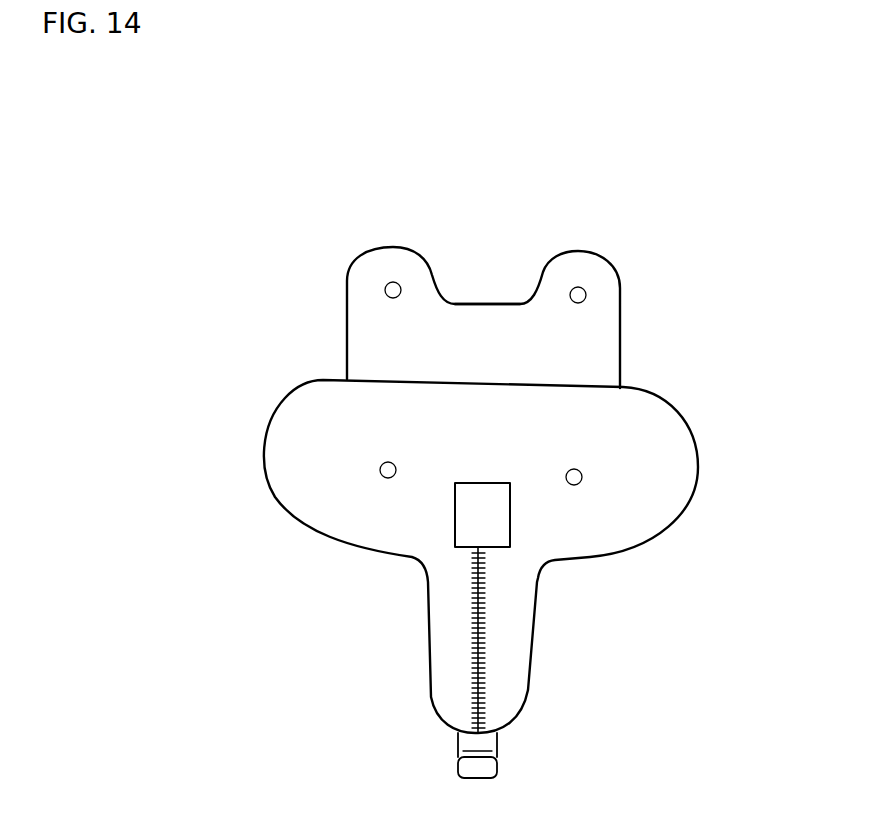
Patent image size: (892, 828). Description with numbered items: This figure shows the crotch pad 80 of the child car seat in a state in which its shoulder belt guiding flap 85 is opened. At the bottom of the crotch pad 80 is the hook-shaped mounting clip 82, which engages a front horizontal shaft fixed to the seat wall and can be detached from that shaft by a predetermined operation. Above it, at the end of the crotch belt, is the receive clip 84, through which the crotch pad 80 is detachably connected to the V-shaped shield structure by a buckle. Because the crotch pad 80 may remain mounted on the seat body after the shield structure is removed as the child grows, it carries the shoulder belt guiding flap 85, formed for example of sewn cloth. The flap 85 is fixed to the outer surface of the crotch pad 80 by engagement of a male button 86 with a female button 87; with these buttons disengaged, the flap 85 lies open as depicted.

The crotch pad 80 is at (290, 250).
The mounting clip 82 is at (488, 768).
The receive clip 84 is at (455, 508).
The shoulder belt guiding flap 85 is at (479, 318).
The male button 86 is at (393, 282).
The female button 87 is at (380, 470).